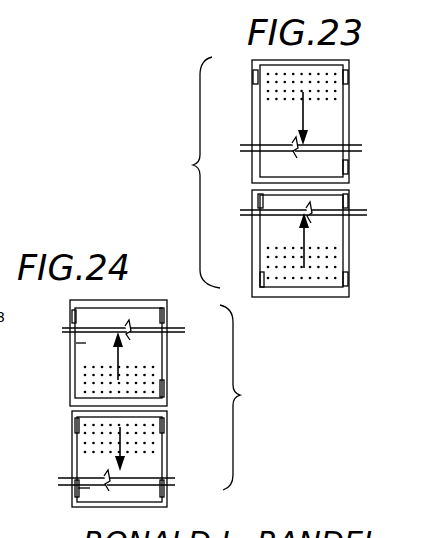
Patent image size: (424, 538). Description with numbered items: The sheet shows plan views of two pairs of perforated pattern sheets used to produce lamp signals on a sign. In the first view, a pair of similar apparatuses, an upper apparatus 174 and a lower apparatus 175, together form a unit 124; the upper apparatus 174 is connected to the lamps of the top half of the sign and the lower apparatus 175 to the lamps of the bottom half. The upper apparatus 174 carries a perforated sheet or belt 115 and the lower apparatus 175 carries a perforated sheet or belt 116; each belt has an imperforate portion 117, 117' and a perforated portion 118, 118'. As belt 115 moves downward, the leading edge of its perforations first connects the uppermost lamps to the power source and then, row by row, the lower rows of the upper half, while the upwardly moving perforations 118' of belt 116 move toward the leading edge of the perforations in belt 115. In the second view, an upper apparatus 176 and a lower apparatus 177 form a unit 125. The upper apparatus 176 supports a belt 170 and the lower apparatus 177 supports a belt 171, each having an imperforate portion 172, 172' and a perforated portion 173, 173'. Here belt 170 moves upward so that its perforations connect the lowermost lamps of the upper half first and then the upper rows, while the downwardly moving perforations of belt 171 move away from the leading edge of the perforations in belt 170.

In FIG. 23, the perforated sheet or belt 115 is at (337, 141).
In FIG. 23, the perforated sheet or belt 116 is at (265, 203).
In FIG. 23, the imperforate portion 117 is at (316, 121).
In FIG. 23, the imperforate portion 117' is at (317, 243).
In FIG. 23, the perforated portion 118 is at (323, 82).
In FIG. 23, the perforated portion 118' is at (324, 266).
In FIG. 23, the unit 124 is at (184, 172).
In FIG. 24, the unit 125 is at (246, 397).
In FIG. 24, the perforated sheet or belt 170 is at (148, 306).
In FIG. 24, the perforated sheet or belt 171 is at (80, 471).
In FIG. 24, the imperforate portion 172 is at (60, 343).
In FIG. 24, the imperforate portion 172' is at (62, 493).
In FIG. 24, the perforated portion 173 is at (99, 381).
In FIG. 24, the perforated portion 173' is at (101, 459).
In FIG. 23, the upper apparatus 174 is at (257, 73).
In FIG. 23, the lower apparatus 175 is at (259, 277).
In FIG. 24, the upper apparatus 176 is at (163, 328).
In FIG. 24, the lower apparatus 177 is at (166, 487).